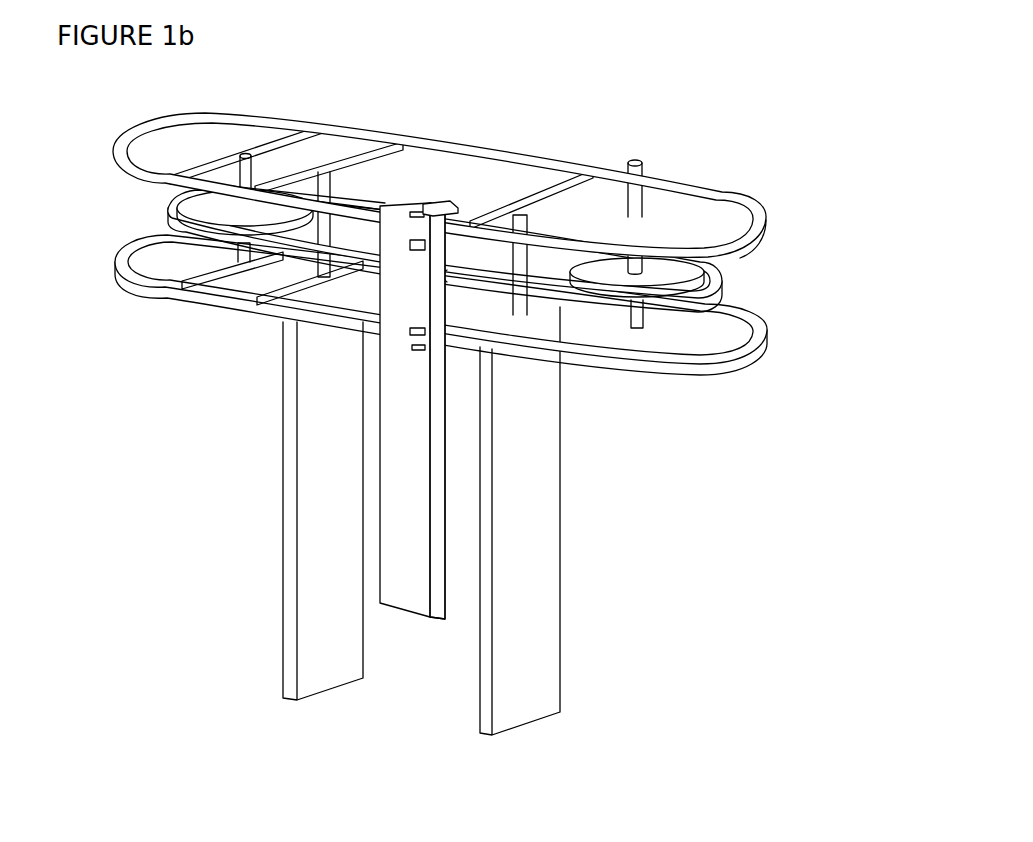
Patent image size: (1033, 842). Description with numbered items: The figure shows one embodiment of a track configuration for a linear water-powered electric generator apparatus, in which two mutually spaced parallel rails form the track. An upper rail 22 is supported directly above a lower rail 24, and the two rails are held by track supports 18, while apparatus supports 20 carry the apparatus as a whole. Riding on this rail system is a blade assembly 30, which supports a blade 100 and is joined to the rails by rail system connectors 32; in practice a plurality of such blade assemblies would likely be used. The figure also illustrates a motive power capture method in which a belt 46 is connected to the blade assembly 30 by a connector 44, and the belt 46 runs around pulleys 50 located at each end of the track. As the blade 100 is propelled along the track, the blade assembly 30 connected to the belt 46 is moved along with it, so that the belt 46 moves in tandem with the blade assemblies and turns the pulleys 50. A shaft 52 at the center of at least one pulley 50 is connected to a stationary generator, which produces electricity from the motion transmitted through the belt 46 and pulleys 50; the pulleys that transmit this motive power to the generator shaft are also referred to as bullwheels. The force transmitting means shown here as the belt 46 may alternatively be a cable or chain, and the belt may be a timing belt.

The track supports 18 is at (520, 218).
The apparatus supports 20 is at (546, 555).
The upper rail 22 is at (268, 117).
The lower rail 24 is at (187, 297).
The blade assembly 30 is at (413, 284).
The rail system connectors 32 is at (438, 203).
The connector 44 is at (467, 268).
The belt 46 is at (652, 302).
The pulleys 50 is at (686, 272).
The shaft 52 is at (641, 172).
The blade 100 is at (422, 500).